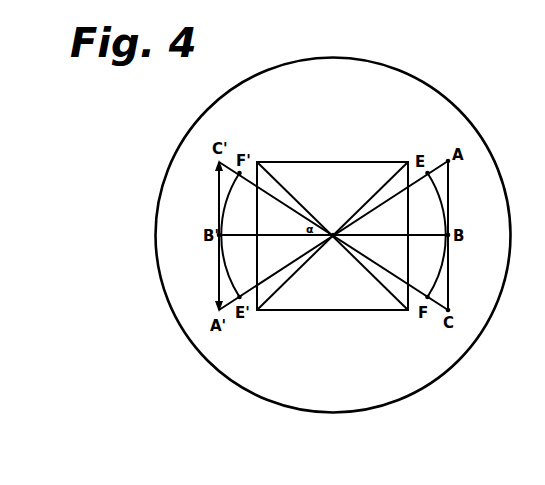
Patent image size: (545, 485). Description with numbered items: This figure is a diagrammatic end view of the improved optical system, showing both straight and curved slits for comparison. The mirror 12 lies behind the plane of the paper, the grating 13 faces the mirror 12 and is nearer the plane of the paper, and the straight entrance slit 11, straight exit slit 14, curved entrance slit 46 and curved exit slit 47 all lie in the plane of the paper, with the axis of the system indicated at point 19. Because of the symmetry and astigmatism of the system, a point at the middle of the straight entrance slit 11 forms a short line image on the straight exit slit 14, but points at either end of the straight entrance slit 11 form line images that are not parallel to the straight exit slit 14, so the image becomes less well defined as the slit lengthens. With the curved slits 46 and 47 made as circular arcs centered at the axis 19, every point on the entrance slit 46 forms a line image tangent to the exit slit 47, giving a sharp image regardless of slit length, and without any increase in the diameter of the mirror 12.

The mirror 12 is at (443, 107).
The grating 13 is at (348, 310).
The straight exit slit 14 is at (219, 191).
The curved exit slit 47 is at (227, 278).
The curved entrance slit 46 is at (443, 272).
The straight entrance slit 11 is at (448, 295).
The axis of the system 19 is at (333, 237).